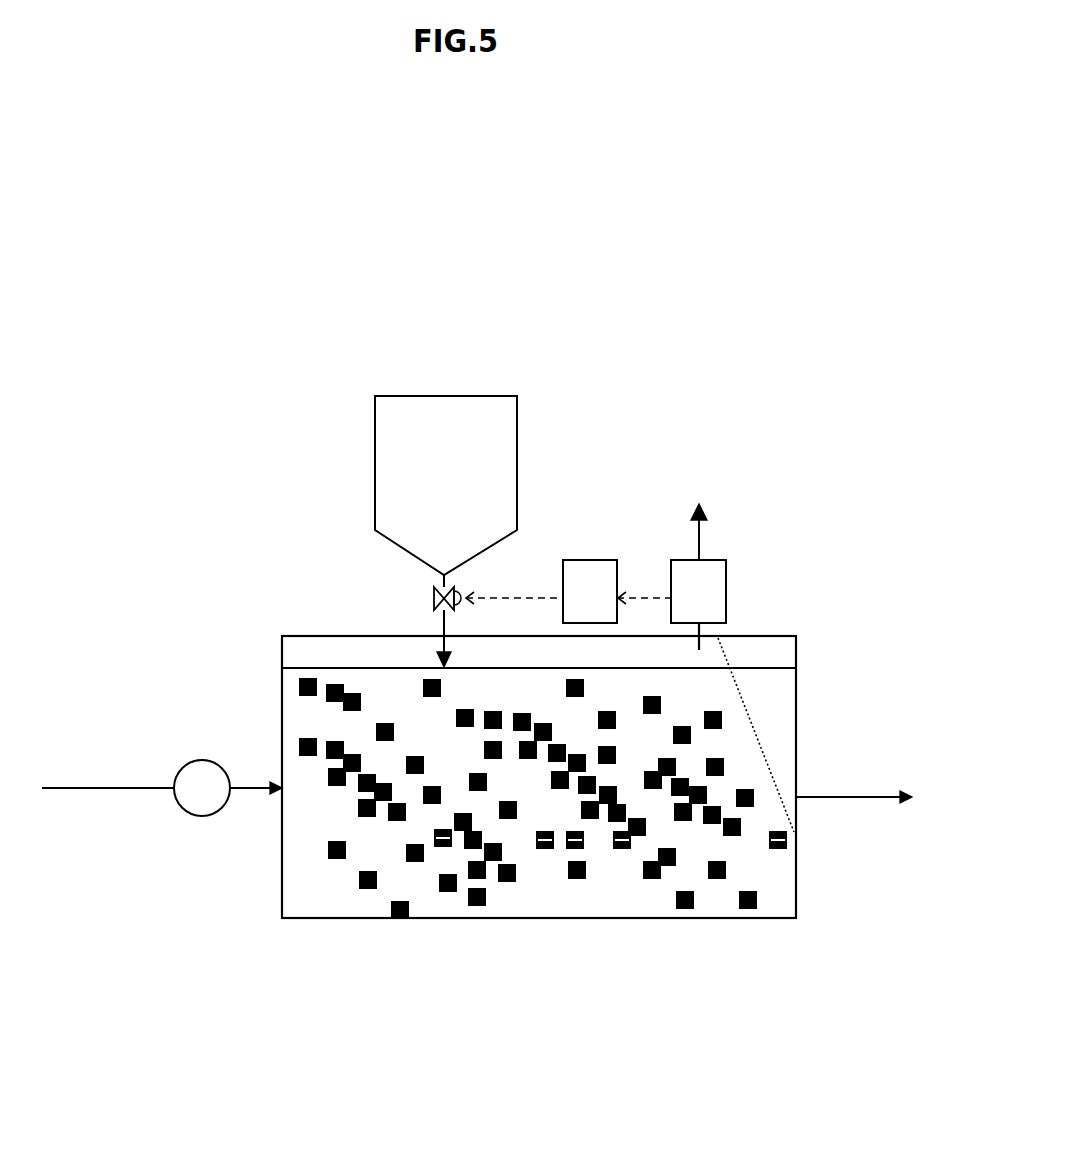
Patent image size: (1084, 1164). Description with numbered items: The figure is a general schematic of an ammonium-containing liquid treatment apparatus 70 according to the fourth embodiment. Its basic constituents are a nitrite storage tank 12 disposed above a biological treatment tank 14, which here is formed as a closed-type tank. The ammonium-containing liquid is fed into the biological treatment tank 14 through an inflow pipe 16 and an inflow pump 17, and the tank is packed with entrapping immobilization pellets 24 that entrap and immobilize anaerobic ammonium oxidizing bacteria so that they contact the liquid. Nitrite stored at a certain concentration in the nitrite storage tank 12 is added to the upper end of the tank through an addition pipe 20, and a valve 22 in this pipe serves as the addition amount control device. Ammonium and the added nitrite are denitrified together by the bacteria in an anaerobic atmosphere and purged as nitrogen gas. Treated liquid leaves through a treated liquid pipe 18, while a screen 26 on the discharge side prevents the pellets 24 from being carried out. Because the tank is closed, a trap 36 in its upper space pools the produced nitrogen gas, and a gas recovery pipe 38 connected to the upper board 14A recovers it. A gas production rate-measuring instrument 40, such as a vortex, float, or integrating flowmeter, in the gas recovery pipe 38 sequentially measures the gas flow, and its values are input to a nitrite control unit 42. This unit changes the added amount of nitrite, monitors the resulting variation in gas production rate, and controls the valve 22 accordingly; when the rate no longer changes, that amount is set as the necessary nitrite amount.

The nitrite storage tank 12 is at (517, 452).
The biological treatment tank 14 is at (573, 918).
The upper board 14A is at (556, 637).
The inflow pipe 16 is at (88, 788).
The inflow pump 17 is at (202, 816).
The treated liquid pipe 18 is at (860, 797).
The addition pipe 20 is at (444, 622).
The valve 22 is at (437, 590).
The entrapping immobilization pellets 24 is at (300, 746).
The screen 26 is at (753, 728).
The trap 36 is at (309, 638).
The gas recovery pipe 38 is at (705, 632).
The gas production rate-measuring instrument 40 is at (726, 590).
The nitrite control unit 42 is at (590, 560).
The ammonium-containing liquid treatment apparatus 70 is at (852, 516).